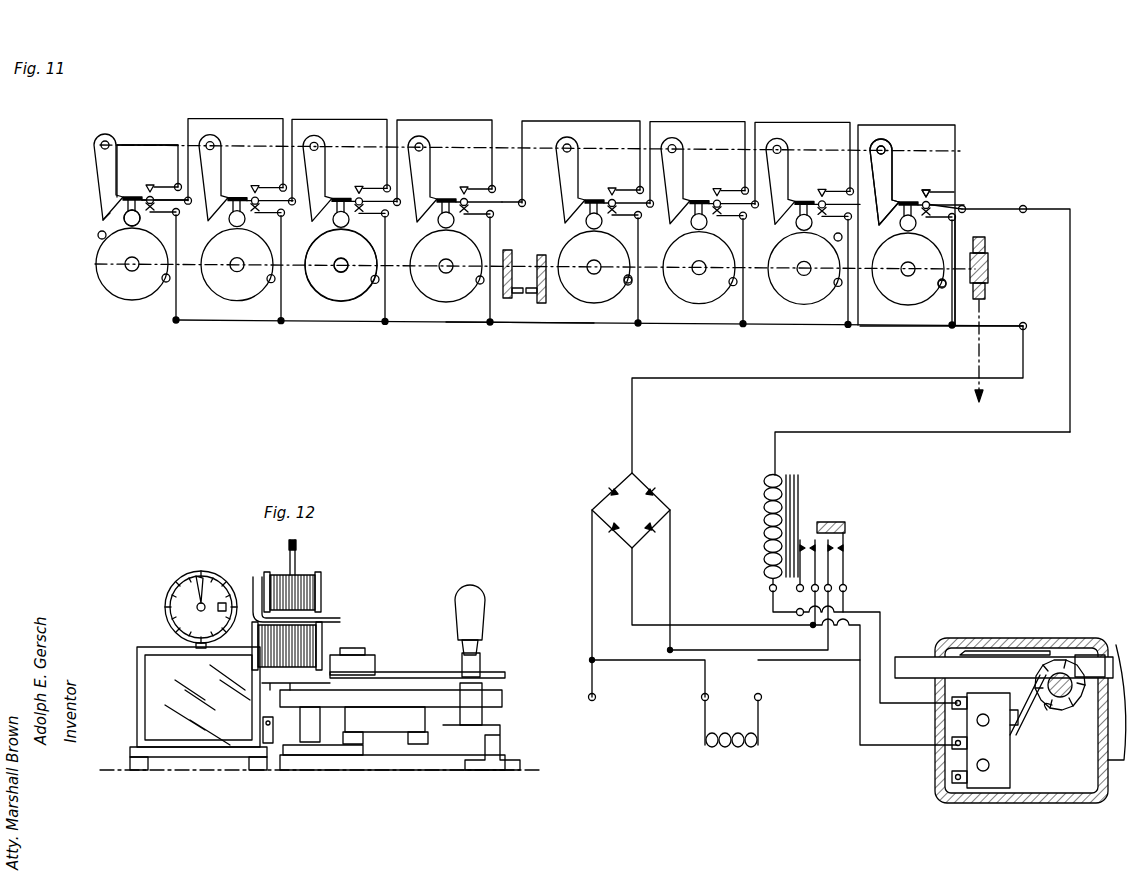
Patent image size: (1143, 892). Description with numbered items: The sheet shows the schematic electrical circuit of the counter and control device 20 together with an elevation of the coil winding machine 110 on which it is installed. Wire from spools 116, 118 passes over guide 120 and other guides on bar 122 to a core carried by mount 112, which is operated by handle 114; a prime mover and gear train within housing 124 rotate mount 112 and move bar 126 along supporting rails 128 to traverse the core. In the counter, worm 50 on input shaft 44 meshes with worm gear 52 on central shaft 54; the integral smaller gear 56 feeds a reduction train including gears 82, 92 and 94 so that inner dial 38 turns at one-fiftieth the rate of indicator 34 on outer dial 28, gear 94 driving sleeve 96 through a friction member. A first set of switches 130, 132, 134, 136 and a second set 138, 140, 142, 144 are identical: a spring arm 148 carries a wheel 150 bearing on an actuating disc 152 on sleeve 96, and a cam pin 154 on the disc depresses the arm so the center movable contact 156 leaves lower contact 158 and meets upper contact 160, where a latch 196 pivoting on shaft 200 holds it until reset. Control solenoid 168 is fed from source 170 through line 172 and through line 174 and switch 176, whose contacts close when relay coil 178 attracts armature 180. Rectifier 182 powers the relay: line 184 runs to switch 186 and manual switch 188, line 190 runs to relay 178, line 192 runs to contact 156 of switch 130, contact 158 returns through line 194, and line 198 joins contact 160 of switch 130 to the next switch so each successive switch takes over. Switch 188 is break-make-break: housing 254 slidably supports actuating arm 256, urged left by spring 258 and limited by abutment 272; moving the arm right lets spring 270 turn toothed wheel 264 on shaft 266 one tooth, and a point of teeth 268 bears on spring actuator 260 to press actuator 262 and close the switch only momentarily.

In FIG. 12, the counter and control device 20 is at (160, 597).
In FIG. 12, the outer dial 28 is at (172, 573).
In FIG. 12, the indicator 34 is at (199, 574).
In FIG. 12, the inner dial 38 is at (228, 600).
In FIG. 11, the input shaft 44 is at (982, 316).
In FIG. 11, the worm 50 is at (990, 268).
In FIG. 11, the worm gear 52 is at (987, 243).
In FIG. 11, the central shaft 54 is at (880, 285).
In FIG. 11, the smaller gear 56 is at (533, 286).
In FIG. 11, the larger gear 82 is at (543, 305).
In FIG. 11, the smaller gear 92 is at (508, 300).
In FIG. 11, the larger gear 94 is at (516, 286).
In FIG. 11, the sleeve 96 is at (412, 300).
In FIG. 12, the coil winding machine 110 is at (355, 640).
In FIG. 12, the mount 112 is at (345, 660).
In FIG. 12, the handle 114 is at (480, 600).
In FIG. 12, the spool 116 is at (320, 568).
In FIG. 12, the spool 118 is at (285, 628).
In FIG. 12, the guide 120 is at (300, 543).
In FIG. 12, the bar 122 is at (495, 668).
In FIG. 12, the housing 124 is at (205, 735).
In FIG. 12, the bar 126 is at (503, 696).
In FIG. 12, the supporting rails 128 is at (335, 768).
In FIG. 11, the switch 130 is at (968, 194).
In FIG. 11, the switch 132 is at (820, 172).
In FIG. 11, the switch 134 is at (718, 172).
In FIG. 11, the switch 136 is at (608, 178).
In FIG. 11, the switch 138 is at (480, 172).
In FIG. 11, the switch 140 is at (372, 172).
In FIG. 11, the switch 142 is at (300, 172).
In FIG. 11, the switch 144 is at (222, 172).
In FIG. 11, the spring arm 148 is at (75, 209).
In FIG. 11, the rotatable wheel 150 is at (90, 226).
In FIG. 11, the actuating disc 152 is at (98, 270).
In FIG. 11, the cam pin 154 is at (100, 238).
In FIG. 11, the center movable contact 156 is at (150, 197).
In FIG. 11, the lower contact 158 is at (162, 275).
In FIG. 11, the upper contact 160 is at (150, 184).
In FIG. 11, the control solenoid 168 is at (706, 743).
In FIG. 11, the source of operating potential 170 is at (596, 700).
In FIG. 11, the line 172 is at (630, 663).
In FIG. 11, the line 174 is at (725, 648).
In FIG. 11, the switch 176 is at (848, 553).
In FIG. 11, the relay coil 178 is at (762, 500).
In FIG. 11, the armature 180 is at (840, 520).
In FIG. 11, the rectifier 182 is at (612, 478).
In FIG. 11, the line 184 is at (728, 620).
In FIG. 11, the switch 186 is at (805, 540).
In FIG. 11, the manual switch 188 is at (965, 758).
In FIG. 12, the manual switch 188 is at (290, 745).
In FIG. 11, the line 190 is at (760, 590).
In FIG. 11, the line 192 is at (905, 432).
In FIG. 11, the line 194 is at (880, 328).
In FIG. 11, the latch 196 is at (96, 162).
In FIG. 11, the line 198 is at (946, 124).
In FIG. 11, the shaft 200 is at (147, 114).
In FIG. 11, the housing 254 is at (975, 800).
In FIG. 11, the actuating arm 256 is at (915, 660).
In FIG. 11, the spring 258 is at (1100, 745).
In FIG. 11, the spring actuator 260 is at (1020, 730).
In FIG. 11, the actuator 262 is at (1030, 740).
In FIG. 11, the toothed wheel 264 is at (1062, 708).
In FIG. 11, the shaft 266 is at (1062, 672).
In FIG. 11, the teeth 268 is at (1050, 722).
In FIG. 11, the spring 270 is at (1002, 652).
In FIG. 11, the abutment 272 is at (1088, 655).